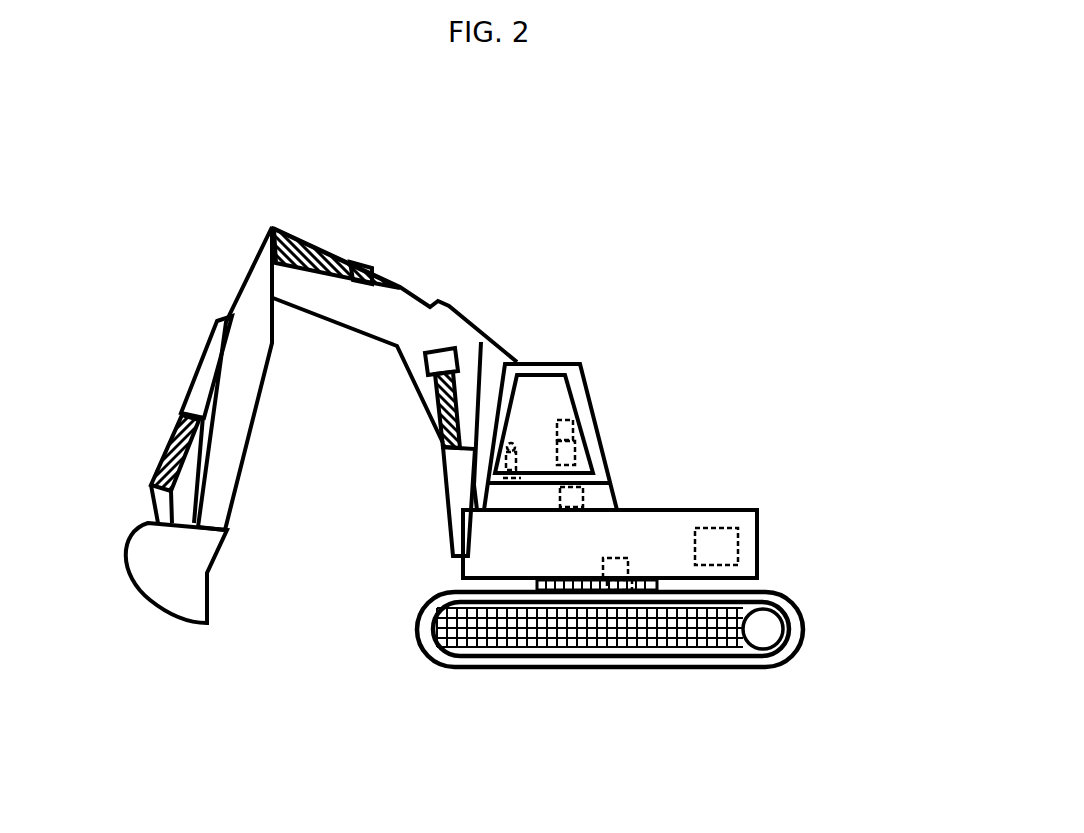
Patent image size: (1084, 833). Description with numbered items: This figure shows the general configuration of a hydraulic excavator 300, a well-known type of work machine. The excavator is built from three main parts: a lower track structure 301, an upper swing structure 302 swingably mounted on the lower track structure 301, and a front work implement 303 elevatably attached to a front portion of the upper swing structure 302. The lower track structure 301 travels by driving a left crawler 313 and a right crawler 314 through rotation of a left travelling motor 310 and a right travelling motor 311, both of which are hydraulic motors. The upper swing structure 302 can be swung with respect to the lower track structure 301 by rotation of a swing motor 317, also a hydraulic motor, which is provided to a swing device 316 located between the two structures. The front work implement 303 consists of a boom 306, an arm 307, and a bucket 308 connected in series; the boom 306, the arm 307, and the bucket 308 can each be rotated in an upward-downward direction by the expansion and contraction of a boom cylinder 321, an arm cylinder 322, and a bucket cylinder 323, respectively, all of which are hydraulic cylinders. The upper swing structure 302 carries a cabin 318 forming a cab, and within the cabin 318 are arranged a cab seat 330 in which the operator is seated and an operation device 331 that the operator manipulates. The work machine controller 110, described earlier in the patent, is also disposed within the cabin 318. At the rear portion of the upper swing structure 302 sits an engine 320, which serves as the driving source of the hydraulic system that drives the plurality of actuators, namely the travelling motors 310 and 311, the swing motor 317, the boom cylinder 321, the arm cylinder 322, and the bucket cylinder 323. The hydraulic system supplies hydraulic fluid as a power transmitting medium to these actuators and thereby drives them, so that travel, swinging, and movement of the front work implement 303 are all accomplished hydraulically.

The hydraulic excavator 300 is at (628, 344).
The lower track structure 301 is at (808, 627).
The upper swing structure 302 is at (785, 540).
The front work implement 303 is at (227, 262).
The boom 306 is at (425, 325).
The arm 307 is at (247, 325).
The bucket 308 is at (155, 602).
The left travelling motor 310 is at (763, 681).
The right travelling motor 311 is at (760, 642).
The left crawler 313 is at (611, 689).
The right crawler 314 is at (485, 660).
The swing device 316 is at (657, 587).
The swing motor 317 is at (630, 562).
The cabin 318 is at (537, 364).
The engine 320 is at (740, 540).
The boom cylinder 321 is at (437, 440).
The arm cylinder 322 is at (320, 252).
The bucket cylinder 323 is at (153, 473).
The cab seat 330 is at (575, 465).
The operation device 331 is at (515, 460).
The work machine controller 110 is at (592, 493).